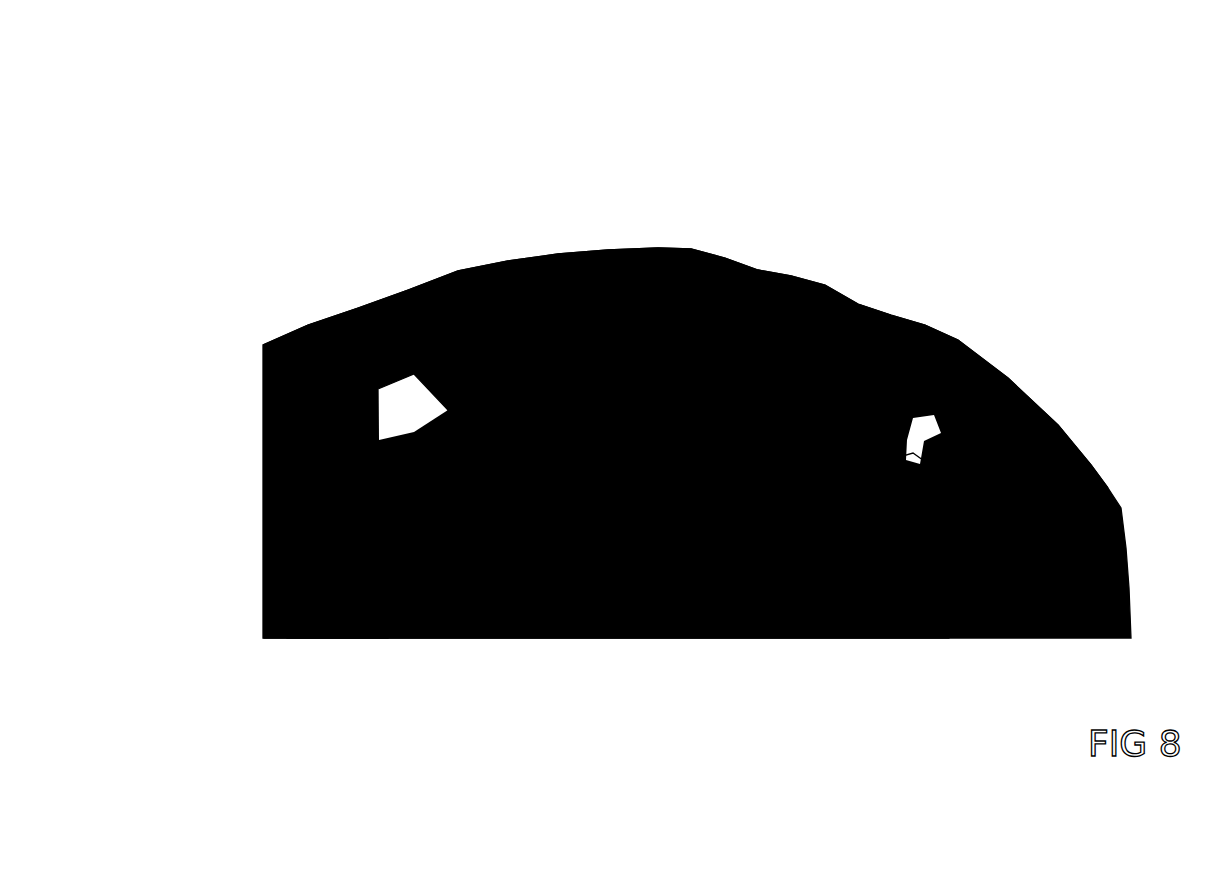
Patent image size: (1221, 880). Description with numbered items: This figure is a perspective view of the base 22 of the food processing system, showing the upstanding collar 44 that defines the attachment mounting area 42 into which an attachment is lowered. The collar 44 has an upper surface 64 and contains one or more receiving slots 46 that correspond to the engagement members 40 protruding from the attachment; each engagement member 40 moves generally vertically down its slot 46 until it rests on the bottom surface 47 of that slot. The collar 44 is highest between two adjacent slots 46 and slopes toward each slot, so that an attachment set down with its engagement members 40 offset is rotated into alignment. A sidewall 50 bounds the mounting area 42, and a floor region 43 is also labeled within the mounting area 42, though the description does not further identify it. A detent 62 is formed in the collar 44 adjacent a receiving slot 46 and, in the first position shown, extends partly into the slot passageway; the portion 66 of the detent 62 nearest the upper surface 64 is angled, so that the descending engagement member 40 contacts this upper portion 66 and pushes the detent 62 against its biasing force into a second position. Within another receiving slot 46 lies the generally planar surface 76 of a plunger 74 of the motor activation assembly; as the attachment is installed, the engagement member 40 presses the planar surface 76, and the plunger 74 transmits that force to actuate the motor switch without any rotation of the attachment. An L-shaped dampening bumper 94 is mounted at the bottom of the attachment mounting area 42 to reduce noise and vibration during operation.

The base 22 is at (285, 158).
The attachment mounting area 42 is at (256, 568).
The annular floor 43 is at (523, 610).
The upstanding collar 44 is at (672, 287).
The receiving slots 46 is at (370, 300).
The bottom surface 47 is at (910, 480).
The sidewall 50 is at (815, 330).
The detent 62 is at (893, 455).
The upper surface 64 is at (1070, 433).
The portion of the detent 66 is at (940, 405).
The plunger 74 is at (332, 627).
The planar surface 76 is at (405, 388).
The dampening bumpers 94 is at (557, 345).
The engagement members 40 is at (1027, 390).